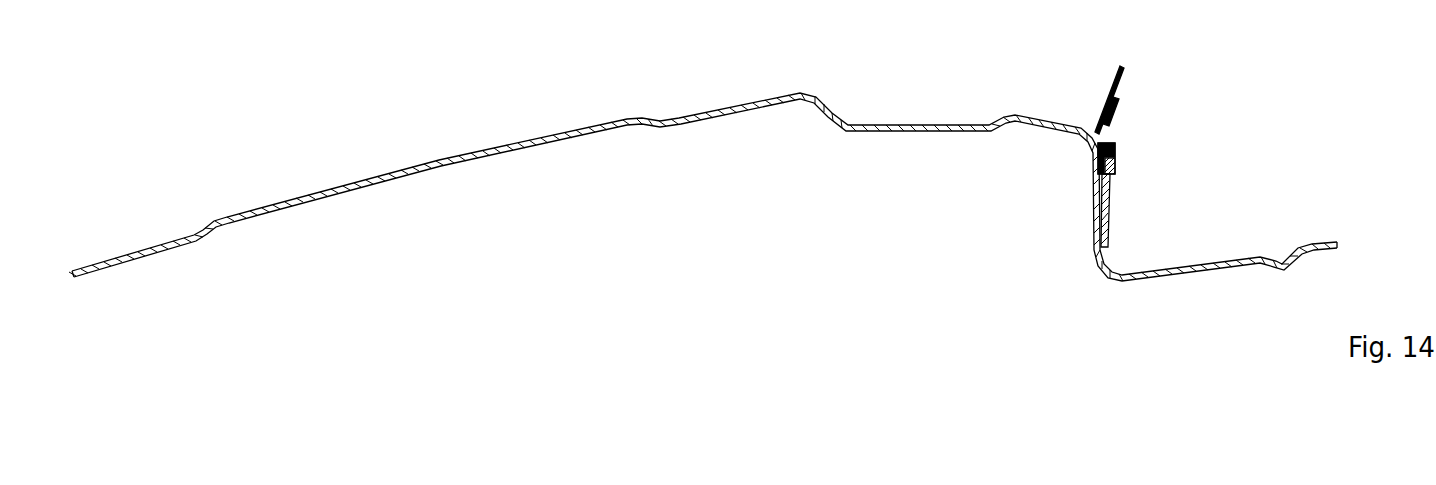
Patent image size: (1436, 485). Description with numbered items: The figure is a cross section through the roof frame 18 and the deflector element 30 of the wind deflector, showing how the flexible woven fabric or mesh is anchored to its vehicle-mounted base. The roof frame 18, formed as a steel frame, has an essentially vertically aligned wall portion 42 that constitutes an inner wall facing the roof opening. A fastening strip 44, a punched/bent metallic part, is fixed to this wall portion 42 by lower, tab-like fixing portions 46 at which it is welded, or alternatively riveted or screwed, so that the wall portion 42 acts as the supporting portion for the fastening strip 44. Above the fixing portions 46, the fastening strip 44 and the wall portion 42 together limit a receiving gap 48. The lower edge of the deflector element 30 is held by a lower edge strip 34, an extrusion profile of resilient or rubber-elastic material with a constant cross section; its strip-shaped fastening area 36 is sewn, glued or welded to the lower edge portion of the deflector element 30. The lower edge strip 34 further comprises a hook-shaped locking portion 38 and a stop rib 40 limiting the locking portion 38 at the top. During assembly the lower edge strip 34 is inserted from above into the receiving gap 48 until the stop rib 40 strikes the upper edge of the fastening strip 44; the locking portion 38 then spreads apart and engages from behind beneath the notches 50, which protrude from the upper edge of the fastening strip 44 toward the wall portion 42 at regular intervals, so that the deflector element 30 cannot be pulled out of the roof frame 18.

The roof frame 18 is at (326, 196).
The deflector element 30 is at (1120, 83).
The lower edge strip 34 is at (1115, 121).
The fastening area 36 is at (1117, 108).
The locking portion 38 is at (1093, 170).
The stop rib 40 is at (1113, 147).
The wall portion 42 is at (1095, 212).
The fastening strip 44 is at (1115, 203).
The fixing portions 46 is at (1112, 230).
The receiving gap 48 is at (1117, 180).
The notches 50 is at (1115, 155).